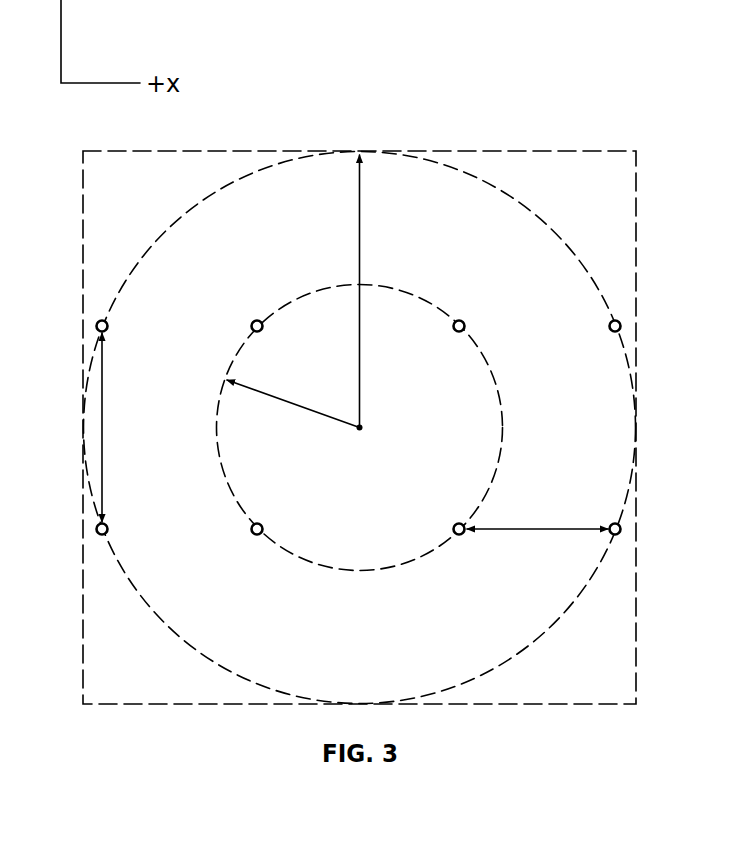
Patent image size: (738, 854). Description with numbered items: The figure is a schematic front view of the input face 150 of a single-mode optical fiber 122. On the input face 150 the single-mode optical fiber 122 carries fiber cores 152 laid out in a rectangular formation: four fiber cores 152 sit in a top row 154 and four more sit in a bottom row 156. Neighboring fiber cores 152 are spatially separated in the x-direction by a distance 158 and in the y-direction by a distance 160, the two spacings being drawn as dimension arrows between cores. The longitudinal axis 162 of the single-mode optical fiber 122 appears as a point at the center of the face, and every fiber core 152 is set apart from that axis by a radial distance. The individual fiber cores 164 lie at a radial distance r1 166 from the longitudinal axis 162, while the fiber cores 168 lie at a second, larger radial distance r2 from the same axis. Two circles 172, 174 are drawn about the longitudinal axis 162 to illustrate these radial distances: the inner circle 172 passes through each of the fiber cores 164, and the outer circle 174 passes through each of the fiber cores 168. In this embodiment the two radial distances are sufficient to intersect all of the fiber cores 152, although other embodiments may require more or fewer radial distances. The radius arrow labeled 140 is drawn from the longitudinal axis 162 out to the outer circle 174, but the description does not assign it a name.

The single-mode optical fiber 122 is at (668, 211).
The outer radius 140 is at (359, 336).
The input face 150 is at (253, 200).
The fiber cores 152 is at (172, 249).
The top row 154 is at (65, 319).
The bottom row 156 is at (63, 518).
The distance 158 is at (533, 527).
The distance 160 is at (103, 432).
The longitudinal axis 162 is at (361, 428).
The individual fiber cores 164 is at (257, 320).
The radial distance r1 166 is at (305, 409).
The fiber cores 168 is at (108, 326).
The circle 172 is at (502, 412).
The circle 174 is at (597, 286).